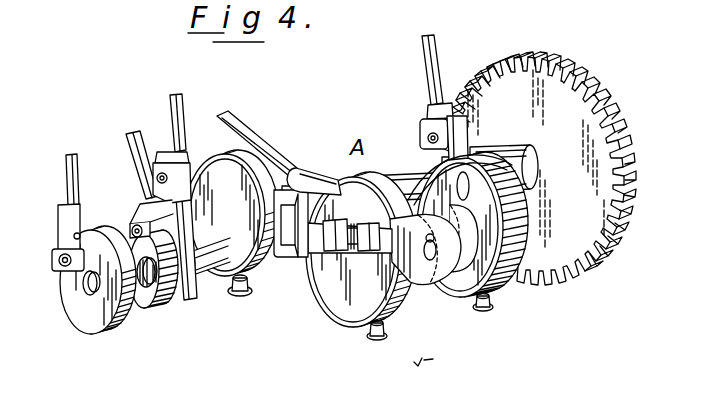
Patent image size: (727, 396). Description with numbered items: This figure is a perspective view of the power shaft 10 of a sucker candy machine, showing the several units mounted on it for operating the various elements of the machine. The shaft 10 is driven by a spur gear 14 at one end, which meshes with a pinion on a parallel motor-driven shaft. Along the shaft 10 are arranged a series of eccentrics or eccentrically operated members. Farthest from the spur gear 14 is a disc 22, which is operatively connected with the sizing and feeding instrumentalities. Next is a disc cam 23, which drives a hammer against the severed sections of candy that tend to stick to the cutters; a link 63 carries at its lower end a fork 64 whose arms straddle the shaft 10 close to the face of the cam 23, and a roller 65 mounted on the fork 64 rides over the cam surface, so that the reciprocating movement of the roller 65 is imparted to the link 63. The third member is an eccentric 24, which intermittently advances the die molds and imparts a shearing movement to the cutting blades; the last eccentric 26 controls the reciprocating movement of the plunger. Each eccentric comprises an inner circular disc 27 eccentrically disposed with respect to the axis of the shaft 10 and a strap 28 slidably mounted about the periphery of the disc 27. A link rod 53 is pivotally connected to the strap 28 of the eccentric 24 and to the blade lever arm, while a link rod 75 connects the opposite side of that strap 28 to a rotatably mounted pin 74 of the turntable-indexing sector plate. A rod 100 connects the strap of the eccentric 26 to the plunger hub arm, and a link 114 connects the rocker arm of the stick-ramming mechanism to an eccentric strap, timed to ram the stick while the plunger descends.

The power shaft 10 is at (197, 250).
The spur gear 14 is at (572, 262).
The disc 22 is at (101, 323).
The disc cam 23 is at (157, 302).
The eccentric 24 is at (250, 273).
The eccentric 26 is at (456, 297).
The inner circular disc 27 is at (490, 274).
The strap 28 is at (521, 237).
The link rod 53 is at (172, 100).
The link 63 is at (138, 169).
The fork 64 is at (141, 210).
The roller 65 is at (152, 227).
The pin 74 is at (467, 233).
The link rod 75 is at (339, 250).
The rod 100 is at (437, 51).
The link 114 is at (268, 148).